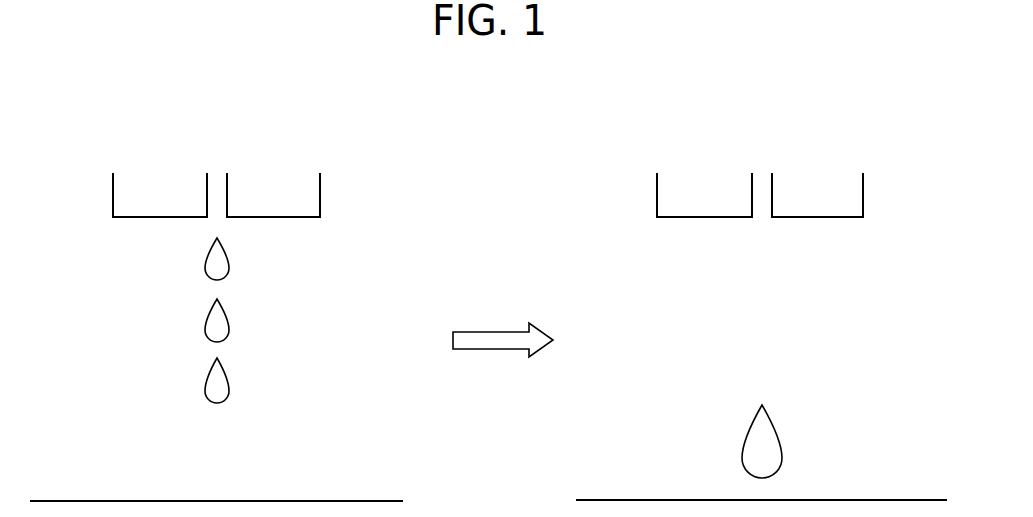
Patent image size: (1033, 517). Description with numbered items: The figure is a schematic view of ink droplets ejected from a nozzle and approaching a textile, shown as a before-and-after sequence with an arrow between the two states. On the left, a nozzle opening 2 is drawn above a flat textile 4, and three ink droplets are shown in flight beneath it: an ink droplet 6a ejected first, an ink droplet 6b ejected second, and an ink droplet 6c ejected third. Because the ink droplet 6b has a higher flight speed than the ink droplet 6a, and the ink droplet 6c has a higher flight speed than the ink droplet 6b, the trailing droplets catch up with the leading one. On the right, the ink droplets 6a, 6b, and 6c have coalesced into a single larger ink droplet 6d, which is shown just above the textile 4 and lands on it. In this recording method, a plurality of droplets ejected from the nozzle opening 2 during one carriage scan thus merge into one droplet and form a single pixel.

The nozzle opening 2 is at (217, 210).
The textile 4 is at (67, 501).
The ink droplet 6a is at (223, 387).
The ink droplet 6b is at (223, 326).
The ink droplet 6c is at (223, 267).
The ink droplet 6d is at (767, 450).